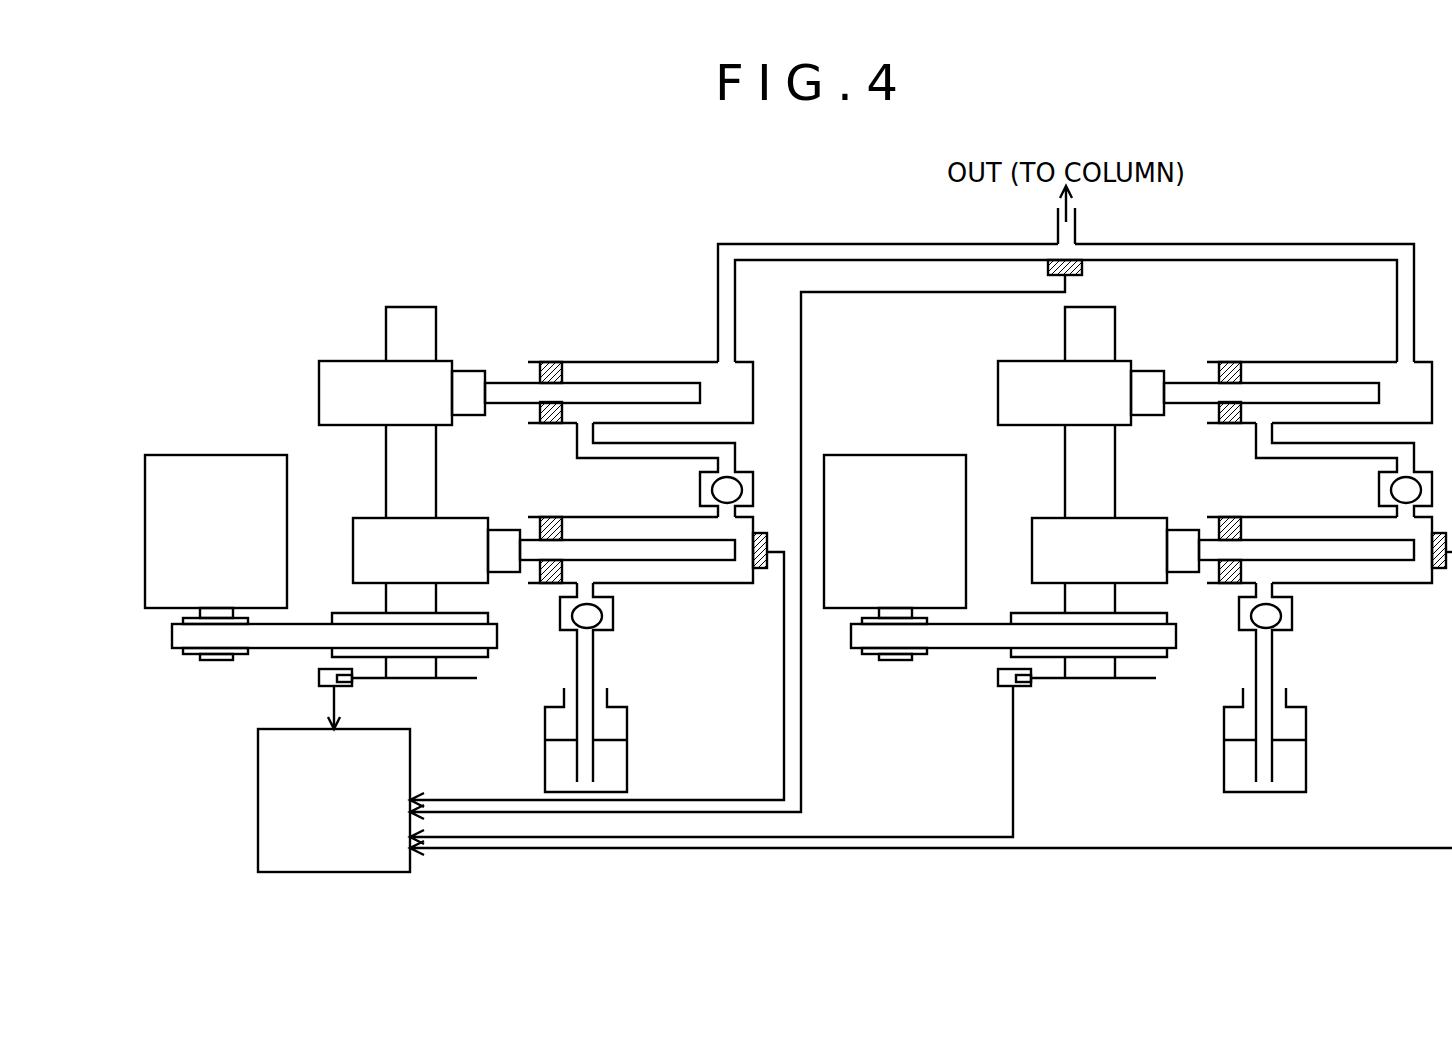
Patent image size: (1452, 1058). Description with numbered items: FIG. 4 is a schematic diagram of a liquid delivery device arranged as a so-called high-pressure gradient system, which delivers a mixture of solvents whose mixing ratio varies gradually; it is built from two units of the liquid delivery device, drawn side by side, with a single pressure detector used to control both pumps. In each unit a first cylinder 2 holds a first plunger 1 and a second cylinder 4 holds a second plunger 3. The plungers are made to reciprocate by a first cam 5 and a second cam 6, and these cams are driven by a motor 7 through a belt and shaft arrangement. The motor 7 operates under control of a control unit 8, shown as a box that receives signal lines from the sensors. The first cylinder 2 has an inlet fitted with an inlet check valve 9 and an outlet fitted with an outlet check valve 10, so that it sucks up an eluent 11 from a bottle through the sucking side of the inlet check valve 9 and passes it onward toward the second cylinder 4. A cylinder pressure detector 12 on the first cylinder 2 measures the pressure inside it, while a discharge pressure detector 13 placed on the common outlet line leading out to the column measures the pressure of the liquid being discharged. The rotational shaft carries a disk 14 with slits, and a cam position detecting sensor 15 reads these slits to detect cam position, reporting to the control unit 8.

The first plunger 1 is at (690, 552).
The first cylinder 2 is at (722, 584).
The second plunger 3 is at (681, 395).
The second cylinder 4 is at (642, 362).
The first cam 5 is at (342, 361).
The second cam 6 is at (366, 518).
The motor 7 is at (214, 455).
The control unit 8 is at (257, 799).
The inlet check valve 9 is at (613, 618).
The outlet check valve 10 is at (700, 491).
The eluent 11 is at (610, 762).
The cylinder pressure detector 12 is at (760, 570).
The discharge pressure detector 13 is at (1082, 268).
The disk 14 is at (416, 681).
The cam position detecting sensor 15 is at (318, 679).